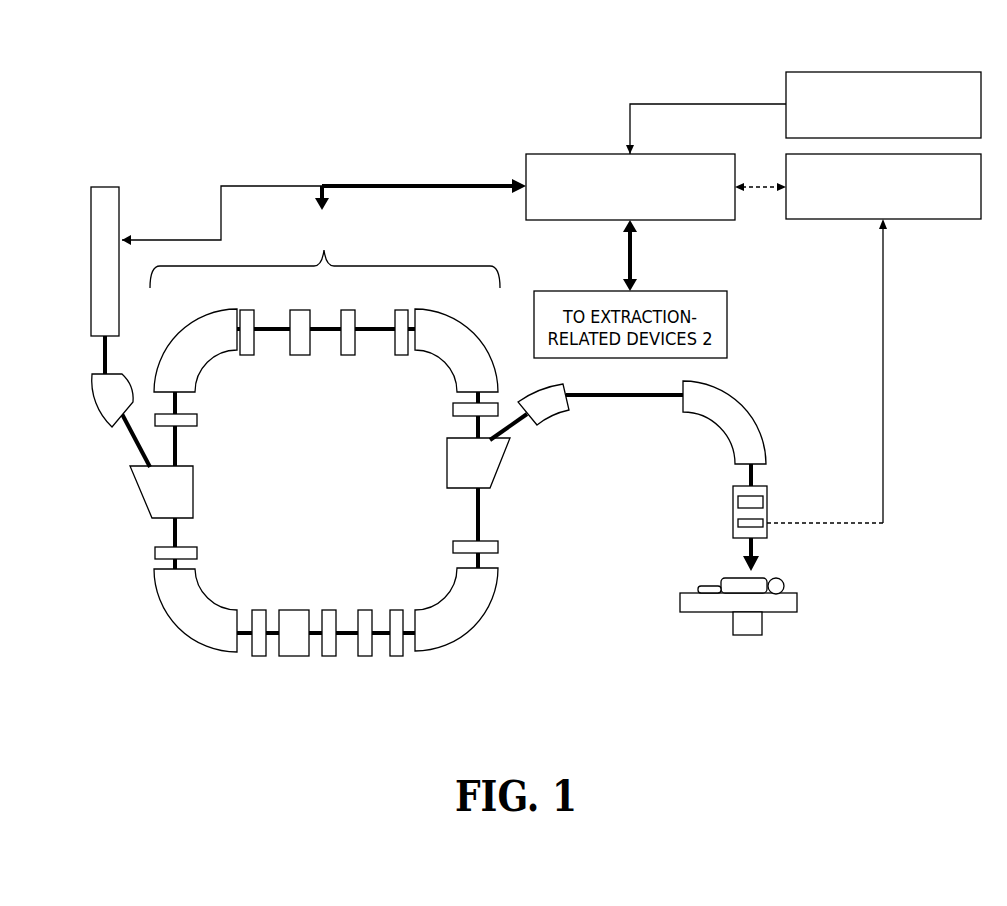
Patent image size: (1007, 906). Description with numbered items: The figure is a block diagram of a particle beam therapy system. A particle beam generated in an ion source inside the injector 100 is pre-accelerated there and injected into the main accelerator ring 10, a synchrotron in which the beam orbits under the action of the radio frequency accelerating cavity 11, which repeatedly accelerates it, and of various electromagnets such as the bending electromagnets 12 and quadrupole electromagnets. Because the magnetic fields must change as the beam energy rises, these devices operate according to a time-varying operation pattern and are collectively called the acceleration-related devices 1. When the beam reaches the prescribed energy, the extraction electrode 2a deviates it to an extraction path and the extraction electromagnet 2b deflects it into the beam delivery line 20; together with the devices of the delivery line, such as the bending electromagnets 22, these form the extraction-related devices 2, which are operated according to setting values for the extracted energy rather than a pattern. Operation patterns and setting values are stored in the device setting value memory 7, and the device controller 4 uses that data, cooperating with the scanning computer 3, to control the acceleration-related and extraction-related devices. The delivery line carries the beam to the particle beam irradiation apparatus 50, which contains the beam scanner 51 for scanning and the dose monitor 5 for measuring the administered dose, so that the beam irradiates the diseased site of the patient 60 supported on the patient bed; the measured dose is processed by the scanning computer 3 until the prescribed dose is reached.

The injector 100 is at (92, 292).
The acceleration-related devices 1 is at (324, 250).
The device controller 4 is at (527, 156).
The device setting value memory 7 is at (877, 72).
The scanning computer 3 is at (820, 220).
The main accelerator ring 10 is at (332, 470).
The radio frequency accelerating cavity 11 is at (295, 607).
The bending electromagnets 12 is at (208, 363).
The extraction-related devices 2 is at (462, 711).
The extraction electrode 2a is at (389, 660).
The extraction electromagnet 2b is at (498, 463).
The beam delivery line 20 is at (601, 561).
The bending electromagnets 22 is at (552, 417).
The dose monitor 5 is at (781, 516).
The beam scanner 51 is at (767, 497).
The particle beam irradiation apparatus 50 is at (767, 514).
The patient 60 is at (765, 574).